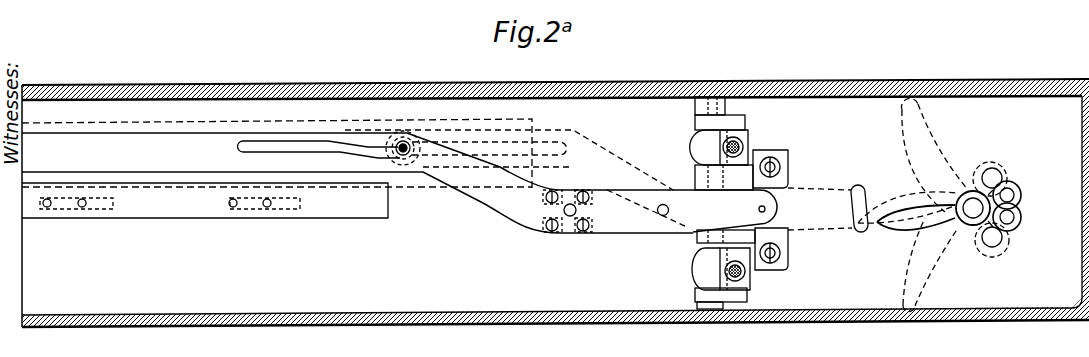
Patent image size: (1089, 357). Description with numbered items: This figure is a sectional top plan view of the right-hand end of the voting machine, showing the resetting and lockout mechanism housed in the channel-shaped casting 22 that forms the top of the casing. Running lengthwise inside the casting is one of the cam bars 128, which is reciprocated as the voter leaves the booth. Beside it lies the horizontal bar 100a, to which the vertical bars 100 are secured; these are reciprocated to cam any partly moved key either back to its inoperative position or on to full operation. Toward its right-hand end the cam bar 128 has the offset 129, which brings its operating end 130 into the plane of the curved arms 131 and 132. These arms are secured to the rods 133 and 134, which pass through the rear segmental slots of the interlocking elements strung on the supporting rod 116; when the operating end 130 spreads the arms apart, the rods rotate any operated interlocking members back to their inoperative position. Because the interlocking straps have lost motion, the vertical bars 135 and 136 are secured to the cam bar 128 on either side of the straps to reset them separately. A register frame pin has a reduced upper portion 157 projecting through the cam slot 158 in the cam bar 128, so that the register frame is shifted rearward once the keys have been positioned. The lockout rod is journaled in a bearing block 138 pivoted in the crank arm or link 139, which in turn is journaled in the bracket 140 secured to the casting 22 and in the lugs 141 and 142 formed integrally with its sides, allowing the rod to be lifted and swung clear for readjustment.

The channel-shaped casting 22 is at (555, 203).
The vertical bar 100 is at (68, 220).
The horizontal bar 100a is at (277, 200).
The supporting rod 116 is at (950, 273).
The cam bar 128 is at (160, 166).
The offset 129 is at (487, 203).
The operating end 130 is at (768, 212).
The arm 131 is at (857, 186).
The arm 132 is at (864, 232).
The rod 133 is at (1017, 232).
The rod 134 is at (1005, 197).
The vertical bar 135 is at (572, 218).
The vertical bar 136 is at (560, 192).
The bearing block 138 is at (747, 140).
The crank arm 139 is at (697, 252).
The bracket 140 is at (790, 229).
The lug 141 is at (697, 304).
The lug 142 is at (695, 108).
The reduced upper portion 157 is at (405, 146).
The cam slot 158 is at (305, 141).